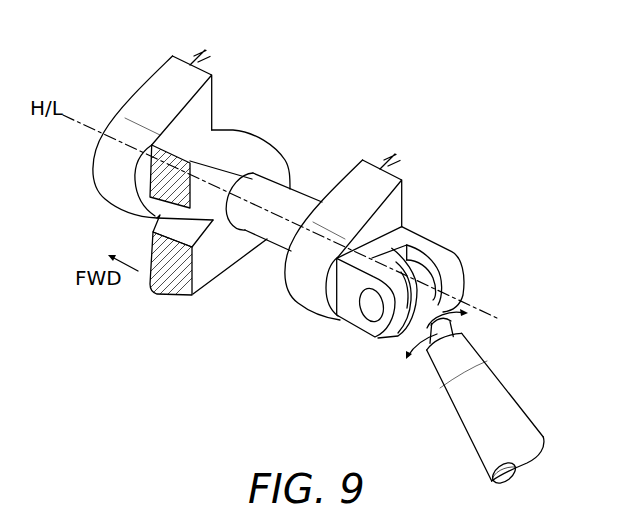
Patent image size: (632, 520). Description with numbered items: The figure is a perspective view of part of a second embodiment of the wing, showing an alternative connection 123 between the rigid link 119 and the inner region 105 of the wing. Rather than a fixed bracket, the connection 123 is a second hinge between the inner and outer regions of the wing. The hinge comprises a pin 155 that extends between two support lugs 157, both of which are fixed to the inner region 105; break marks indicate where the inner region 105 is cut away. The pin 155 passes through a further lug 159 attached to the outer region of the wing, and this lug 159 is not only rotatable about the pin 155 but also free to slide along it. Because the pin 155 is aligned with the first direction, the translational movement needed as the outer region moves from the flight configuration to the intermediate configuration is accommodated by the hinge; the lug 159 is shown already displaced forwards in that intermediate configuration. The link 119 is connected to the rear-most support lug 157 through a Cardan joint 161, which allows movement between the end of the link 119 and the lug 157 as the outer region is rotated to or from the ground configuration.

The inner region of the wing 105 is at (212, 50).
The rigid link 119 is at (523, 395).
The connection 123 is at (286, 332).
The pin 155 is at (277, 190).
The support lugs 157 is at (163, 70).
The lug 159 is at (213, 277).
The Cardan joint 161 is at (456, 232).